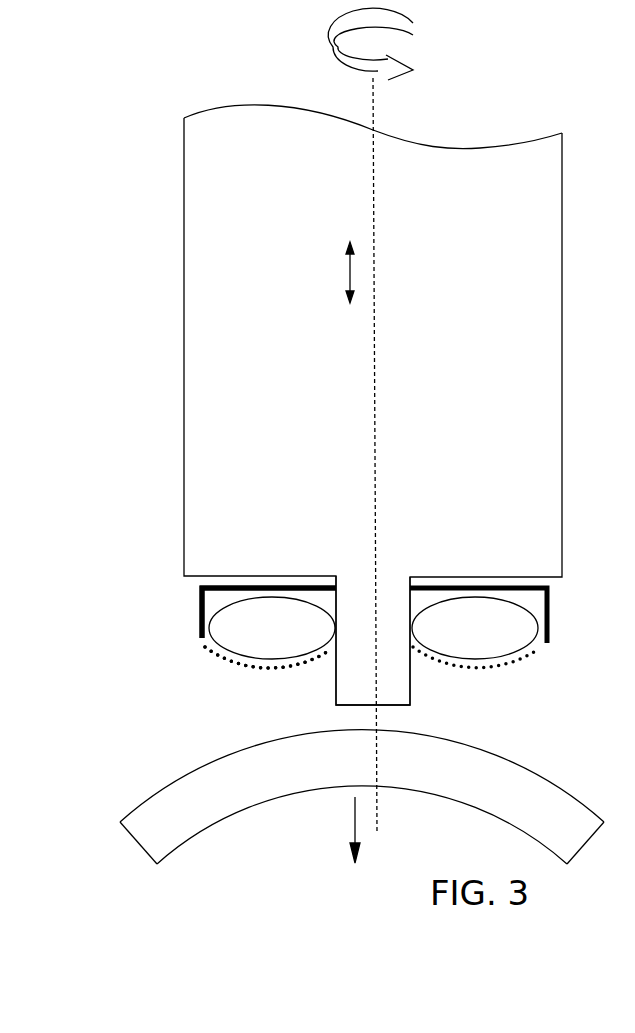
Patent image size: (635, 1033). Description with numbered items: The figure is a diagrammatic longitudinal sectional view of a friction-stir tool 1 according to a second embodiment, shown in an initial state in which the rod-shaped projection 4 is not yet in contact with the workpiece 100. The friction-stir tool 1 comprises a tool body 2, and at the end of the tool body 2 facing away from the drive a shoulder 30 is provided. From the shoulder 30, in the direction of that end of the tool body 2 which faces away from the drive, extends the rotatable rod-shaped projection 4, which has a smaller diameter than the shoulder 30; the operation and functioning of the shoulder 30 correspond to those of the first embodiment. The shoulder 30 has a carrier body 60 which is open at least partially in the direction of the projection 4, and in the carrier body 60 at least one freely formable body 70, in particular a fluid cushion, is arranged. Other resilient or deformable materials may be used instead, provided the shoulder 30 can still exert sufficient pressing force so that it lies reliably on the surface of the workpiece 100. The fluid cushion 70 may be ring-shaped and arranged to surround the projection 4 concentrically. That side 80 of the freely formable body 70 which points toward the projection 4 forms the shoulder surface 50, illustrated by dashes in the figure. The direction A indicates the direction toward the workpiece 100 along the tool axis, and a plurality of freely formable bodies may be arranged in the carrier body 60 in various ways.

The friction-stir tool 1 is at (498, 33).
The tool body 2 is at (537, 327).
The rod-shaped projection 4 is at (410, 706).
The shoulder 30 is at (210, 604).
The shoulder surface 50 is at (228, 665).
The carrier body 60 is at (548, 597).
The freely formable body 70 is at (510, 638).
The side of the freely formable body 80 is at (490, 664).
The workpiece 100 is at (533, 795).
The direction of movement A is at (352, 816).